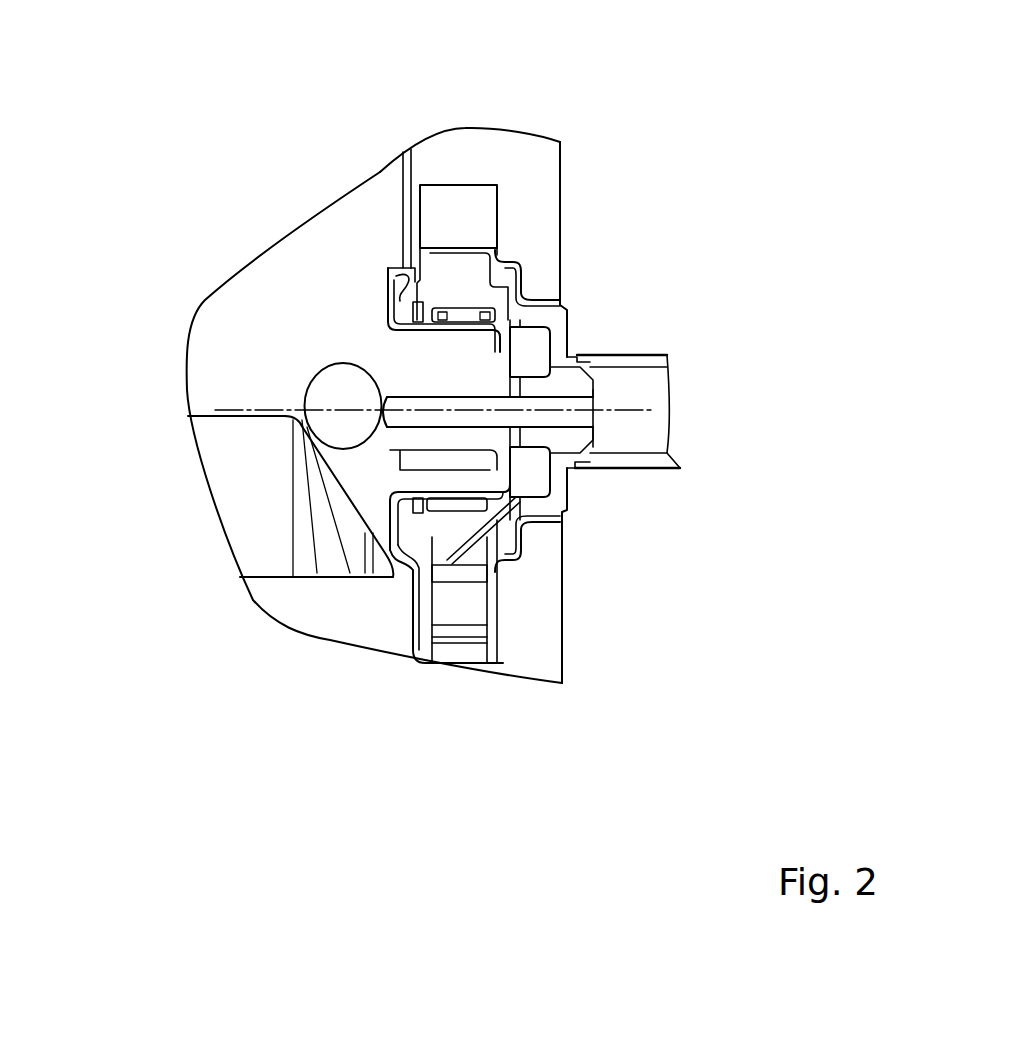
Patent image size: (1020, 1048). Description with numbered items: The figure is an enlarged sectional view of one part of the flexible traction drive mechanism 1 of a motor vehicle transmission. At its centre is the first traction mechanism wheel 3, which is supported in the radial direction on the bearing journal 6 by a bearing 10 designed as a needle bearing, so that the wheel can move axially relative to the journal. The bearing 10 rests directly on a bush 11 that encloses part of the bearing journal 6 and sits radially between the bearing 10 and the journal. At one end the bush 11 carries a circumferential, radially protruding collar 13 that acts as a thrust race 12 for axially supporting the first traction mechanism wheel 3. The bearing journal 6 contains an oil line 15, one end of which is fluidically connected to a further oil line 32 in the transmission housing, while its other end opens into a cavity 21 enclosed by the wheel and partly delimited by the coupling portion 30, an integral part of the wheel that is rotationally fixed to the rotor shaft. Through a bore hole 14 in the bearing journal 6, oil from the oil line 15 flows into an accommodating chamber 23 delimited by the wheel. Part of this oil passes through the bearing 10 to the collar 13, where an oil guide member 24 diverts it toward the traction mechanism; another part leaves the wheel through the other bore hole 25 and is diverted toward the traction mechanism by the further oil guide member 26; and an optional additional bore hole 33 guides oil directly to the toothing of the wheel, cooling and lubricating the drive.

The flexible traction drive mechanism 1 is at (437, 180).
The first traction mechanism wheel 3 is at (558, 342).
The bearing journal 6 is at (403, 473).
The bearing 10 is at (453, 320).
The bush 11 is at (420, 335).
The thrust race 12 is at (388, 272).
The collar 13 is at (393, 307).
The bore hole 14 is at (520, 386).
The oil line 15 is at (408, 421).
The cavity 21 is at (632, 440).
The accommodating chamber 23 is at (533, 482).
The oil guide member 24 is at (400, 556).
The other bore hole 25 is at (567, 313).
The further oil guide member 26 is at (563, 562).
The coupling portion 30 is at (615, 363).
The further oil line 32 is at (325, 405).
The additional bore hole 33 is at (565, 508).